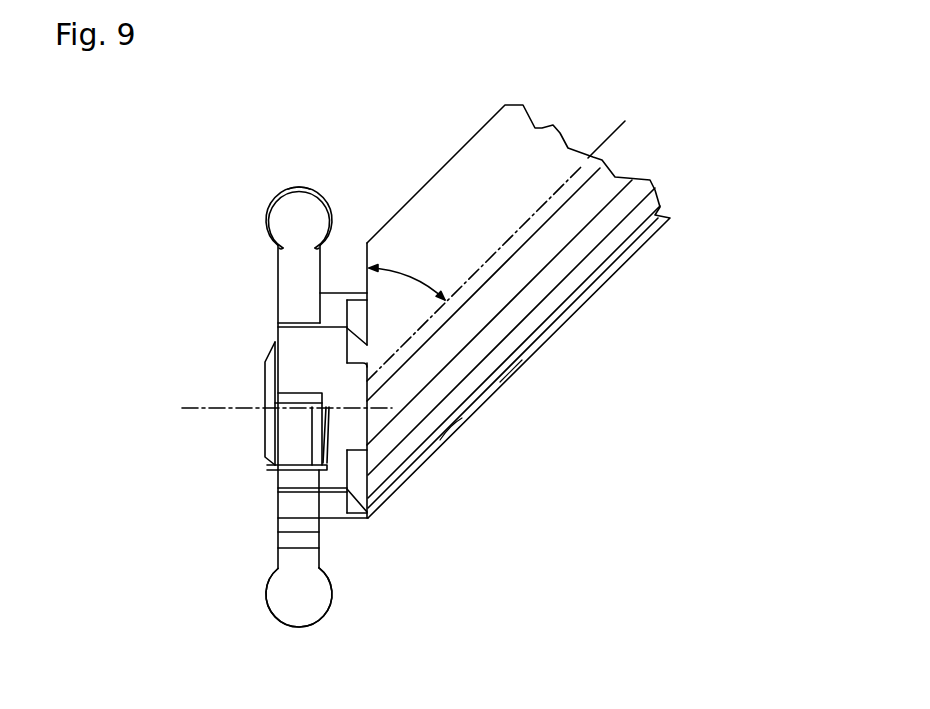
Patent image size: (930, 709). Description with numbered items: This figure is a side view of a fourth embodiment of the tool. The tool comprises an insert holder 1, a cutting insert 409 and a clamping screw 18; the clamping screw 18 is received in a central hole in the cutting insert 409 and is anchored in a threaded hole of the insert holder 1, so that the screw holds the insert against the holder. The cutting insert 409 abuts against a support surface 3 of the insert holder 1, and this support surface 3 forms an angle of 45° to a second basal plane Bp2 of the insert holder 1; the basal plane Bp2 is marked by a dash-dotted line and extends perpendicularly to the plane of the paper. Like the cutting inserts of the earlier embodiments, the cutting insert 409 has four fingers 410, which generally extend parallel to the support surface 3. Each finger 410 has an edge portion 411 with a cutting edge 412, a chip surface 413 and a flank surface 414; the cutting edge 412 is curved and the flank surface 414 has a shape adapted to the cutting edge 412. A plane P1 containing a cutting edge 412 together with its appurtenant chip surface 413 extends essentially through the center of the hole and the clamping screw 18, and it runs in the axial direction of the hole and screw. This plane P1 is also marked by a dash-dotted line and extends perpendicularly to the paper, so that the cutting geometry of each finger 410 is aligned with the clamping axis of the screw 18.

The insert holder 1 is at (581, 326).
The support surface 3 is at (367, 260).
The clamping screw 18 is at (265, 368).
The cutting insert 409 is at (270, 321).
The finger 410 is at (278, 269).
The edge portion 411 is at (296, 180).
The cutting edge 412 is at (308, 188).
The chip surface 413 is at (288, 598).
The flank surface 414 is at (273, 193).
The plane P1 is at (182, 409).
The second basal plane Bp2 is at (612, 137).
The 45 degree angle 45 is at (418, 277).